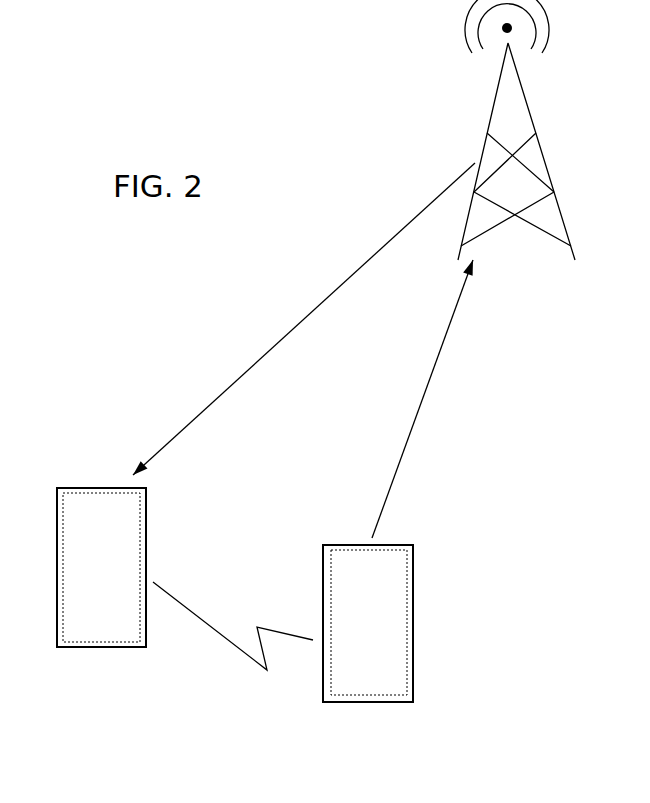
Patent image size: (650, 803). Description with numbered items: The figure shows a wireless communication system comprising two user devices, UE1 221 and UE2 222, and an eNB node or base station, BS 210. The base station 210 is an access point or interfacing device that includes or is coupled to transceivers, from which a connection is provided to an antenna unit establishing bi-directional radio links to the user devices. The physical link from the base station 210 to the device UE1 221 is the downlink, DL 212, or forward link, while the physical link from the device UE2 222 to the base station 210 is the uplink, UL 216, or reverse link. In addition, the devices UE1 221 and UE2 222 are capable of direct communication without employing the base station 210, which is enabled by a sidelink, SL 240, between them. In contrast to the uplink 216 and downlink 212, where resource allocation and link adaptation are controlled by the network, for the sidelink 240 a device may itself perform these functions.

The base station 210 is at (493, 97).
The downlink 212 is at (230, 385).
The uplink 216 is at (452, 343).
The device UE1 221 is at (135, 505).
The device UE2 222 is at (392, 550).
The sidelink 240 is at (267, 670).